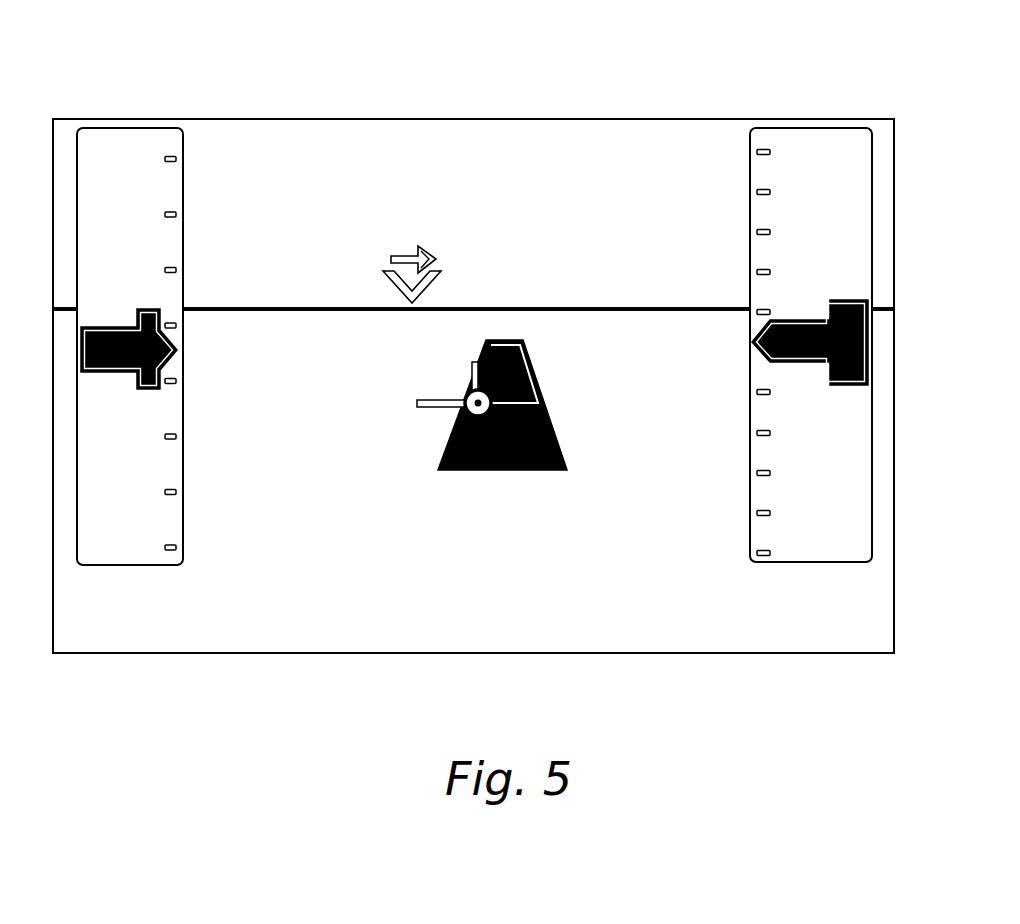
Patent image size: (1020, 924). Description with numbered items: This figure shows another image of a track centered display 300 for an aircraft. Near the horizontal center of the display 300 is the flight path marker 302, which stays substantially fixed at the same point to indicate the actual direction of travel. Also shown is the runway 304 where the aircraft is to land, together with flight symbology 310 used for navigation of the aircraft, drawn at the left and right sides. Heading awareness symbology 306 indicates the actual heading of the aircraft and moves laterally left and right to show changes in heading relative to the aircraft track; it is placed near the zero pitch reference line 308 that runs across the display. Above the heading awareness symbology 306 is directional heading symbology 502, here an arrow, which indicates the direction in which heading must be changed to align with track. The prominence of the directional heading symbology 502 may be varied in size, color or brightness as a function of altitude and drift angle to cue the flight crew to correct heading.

The track centered display 300 is at (697, 88).
The flight path marker 302 is at (432, 408).
The runway 304 is at (567, 469).
The heading awareness symbology 306 is at (438, 276).
The zero pitch reference line 308 is at (300, 308).
The flight symbology 310 is at (183, 222).
The directional heading symbology 502 is at (414, 253).